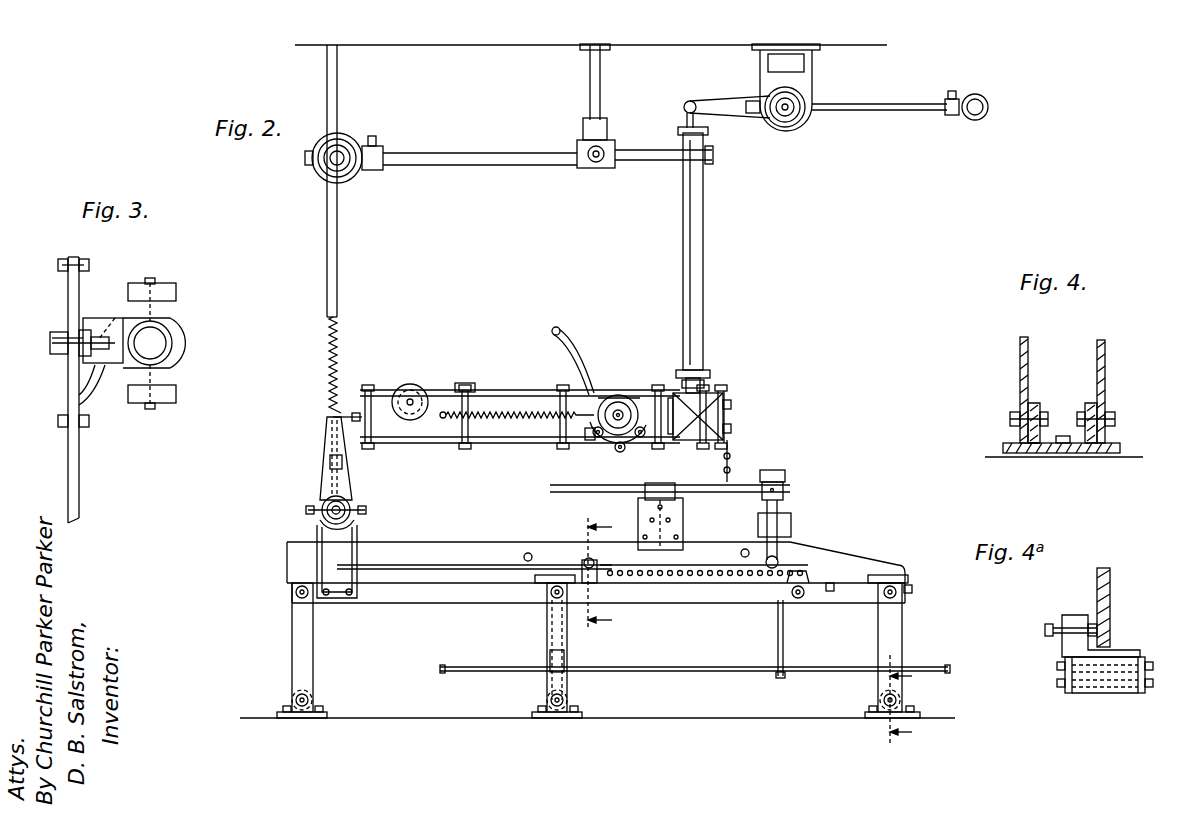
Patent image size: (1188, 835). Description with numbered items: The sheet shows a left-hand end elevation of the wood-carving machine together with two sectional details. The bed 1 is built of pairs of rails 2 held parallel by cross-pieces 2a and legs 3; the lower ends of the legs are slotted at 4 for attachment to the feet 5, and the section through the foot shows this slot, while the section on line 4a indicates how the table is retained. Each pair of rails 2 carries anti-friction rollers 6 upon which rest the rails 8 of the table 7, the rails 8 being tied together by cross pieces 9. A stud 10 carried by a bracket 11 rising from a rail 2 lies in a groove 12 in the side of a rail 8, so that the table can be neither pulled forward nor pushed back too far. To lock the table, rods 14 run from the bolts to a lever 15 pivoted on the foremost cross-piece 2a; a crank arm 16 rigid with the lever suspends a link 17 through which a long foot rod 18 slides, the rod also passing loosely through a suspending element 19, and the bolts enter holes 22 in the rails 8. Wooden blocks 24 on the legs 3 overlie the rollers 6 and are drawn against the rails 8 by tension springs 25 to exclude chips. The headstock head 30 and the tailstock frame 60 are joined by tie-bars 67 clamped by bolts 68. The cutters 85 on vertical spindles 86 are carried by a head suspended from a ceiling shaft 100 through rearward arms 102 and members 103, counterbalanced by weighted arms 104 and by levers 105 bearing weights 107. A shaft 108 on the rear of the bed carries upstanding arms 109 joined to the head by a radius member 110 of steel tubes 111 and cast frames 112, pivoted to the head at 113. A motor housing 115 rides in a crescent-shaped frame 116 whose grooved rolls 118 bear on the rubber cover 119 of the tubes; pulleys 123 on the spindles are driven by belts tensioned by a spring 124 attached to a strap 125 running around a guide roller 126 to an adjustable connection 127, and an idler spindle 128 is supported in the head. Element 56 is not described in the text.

In FIG. 2, the frame or bed 1 is at (527, 593).
In FIG. 2, the rails 2 is at (702, 604).
In FIG. 4A, the rails 2 is at (1065, 696).
In FIG. 2, the cross-pieces 2a is at (295, 592).
In FIG. 3, the cross-pieces 2a is at (175, 338).
In FIG. 2, the legs 3 is at (314, 646).
In FIG. 4, the legs 3 is at (1096, 353).
In FIG. 2, the slot 4 is at (905, 700).
In FIG. 4, the slot 4 is at (1032, 446).
In FIG. 2, the section line 4a— 4a is at (608, 575).
In FIG. 2, the feet 5 is at (318, 712).
In FIG. 4, the feet 5 is at (1006, 456).
In FIG. 2, the anti-friction rollers 6 is at (545, 600).
In FIG. 2, the table 7 is at (830, 557).
In FIG. 2, the rails 8 is at (880, 562).
In FIG. 4A, the rails 8 is at (1108, 570).
In FIG. 2, the cross pieces 9 is at (524, 554).
In FIG. 4A, the stud 10 is at (1044, 627).
In FIG. 2, the bracket 11 is at (584, 560).
In FIG. 4A, the bracket 11 is at (1074, 614).
In FIG. 2, the groove 12 is at (447, 564).
In FIG. 4A, the groove 12 is at (1110, 626).
In FIG. 3, the rod 14 is at (68, 266).
In FIG. 3, the lever 15 is at (67, 298).
In FIG. 3, the crank arm 16 is at (60, 356).
In FIG. 2, the link 17 is at (784, 648).
In FIG. 3, the link 17 is at (78, 489).
In FIG. 2, the rod 18 is at (826, 672).
In FIG. 2, the suspending element 19 is at (548, 640).
In FIG. 2, the holes 22 is at (671, 578).
In FIG. 2, the wooden blocks 24 is at (544, 574).
In FIG. 2, the coiled tension springs 25 is at (874, 590).
In FIG. 2, the head 30 is at (790, 486).
In FIG. 2, the link 56 is at (793, 522).
In FIG. 2, the tailstock frame 60 is at (683, 500).
In FIG. 2, the tie-bars 67 is at (748, 493).
In FIG. 2, the bolts 68 is at (650, 490).
In FIG. 2, the cutters 85 is at (735, 475).
In FIG. 2, the spindles 86 is at (730, 410).
In FIG. 2, the shaft 100 is at (776, 132).
In FIG. 2, the arms 102 is at (712, 104).
In FIG. 2, the members 103 is at (704, 243).
In FIG. 2, the weighted arms 104 is at (897, 112).
In FIG. 2, the levers 105 is at (640, 163).
In FIG. 2, the weights 107 is at (348, 140).
In FIG. 2, the shaft 108 is at (318, 516).
In FIG. 2, the arms 109 is at (327, 432).
In FIG. 2, the radius member 110 is at (523, 412).
In FIG. 2, the steel tubes 111 is at (510, 389).
In FIG. 2, the transverse cast-metal frames 112 is at (370, 447).
In FIG. 2, the pivot 113 is at (704, 346).
In FIG. 2, the motor housing 115 is at (630, 392).
In FIG. 2, the crescent-shaped frame 116 is at (600, 438).
In FIG. 2, the grooved rolls 118 is at (590, 441).
In FIG. 2, the soft rubber cover 119 is at (625, 450).
In FIG. 2, the pulleys 123 is at (734, 428).
In FIG. 2, the coiled contractile spring 124 is at (520, 420).
In FIG. 2, the strap 125 is at (466, 383).
In FIG. 2, the guide roller 126 is at (410, 384).
In FIG. 2, the adjustable connection 127 is at (650, 396).
In FIG. 2, the idler shaft or spindle 128 is at (716, 376).